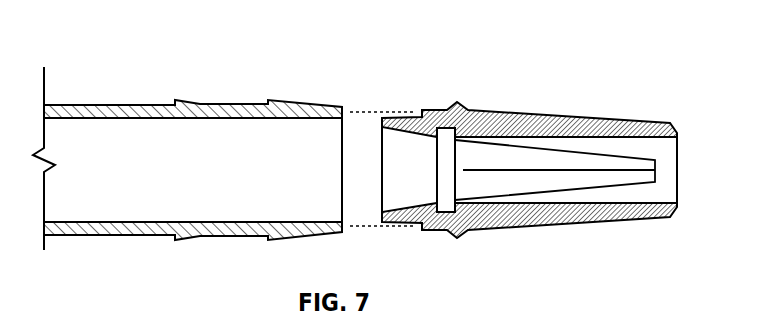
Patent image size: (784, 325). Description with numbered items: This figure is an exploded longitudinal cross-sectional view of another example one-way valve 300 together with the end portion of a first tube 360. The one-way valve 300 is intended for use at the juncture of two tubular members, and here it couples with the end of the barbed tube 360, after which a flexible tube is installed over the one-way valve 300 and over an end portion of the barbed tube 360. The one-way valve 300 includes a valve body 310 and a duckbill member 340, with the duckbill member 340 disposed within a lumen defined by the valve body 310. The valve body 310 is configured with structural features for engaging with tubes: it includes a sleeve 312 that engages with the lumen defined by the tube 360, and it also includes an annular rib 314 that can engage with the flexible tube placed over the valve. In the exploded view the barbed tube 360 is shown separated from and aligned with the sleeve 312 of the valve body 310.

The one-way valve 300 is at (546, 135).
The valve body 310 is at (513, 147).
The sleeve 312 is at (405, 117).
The annular rib 314 is at (456, 102).
The duckbill member 340 is at (655, 185).
The tube 360 is at (242, 104).